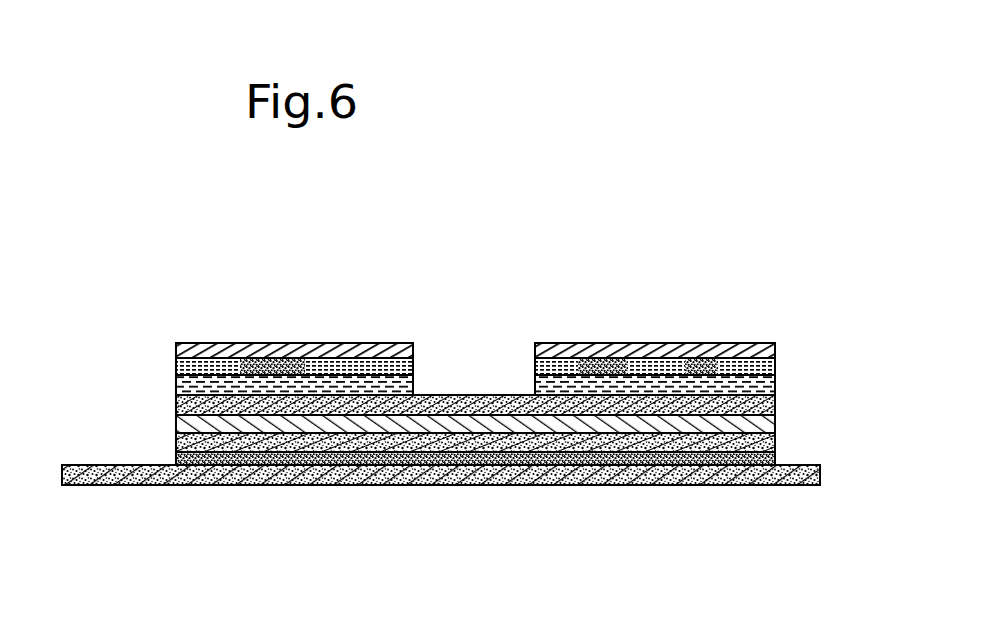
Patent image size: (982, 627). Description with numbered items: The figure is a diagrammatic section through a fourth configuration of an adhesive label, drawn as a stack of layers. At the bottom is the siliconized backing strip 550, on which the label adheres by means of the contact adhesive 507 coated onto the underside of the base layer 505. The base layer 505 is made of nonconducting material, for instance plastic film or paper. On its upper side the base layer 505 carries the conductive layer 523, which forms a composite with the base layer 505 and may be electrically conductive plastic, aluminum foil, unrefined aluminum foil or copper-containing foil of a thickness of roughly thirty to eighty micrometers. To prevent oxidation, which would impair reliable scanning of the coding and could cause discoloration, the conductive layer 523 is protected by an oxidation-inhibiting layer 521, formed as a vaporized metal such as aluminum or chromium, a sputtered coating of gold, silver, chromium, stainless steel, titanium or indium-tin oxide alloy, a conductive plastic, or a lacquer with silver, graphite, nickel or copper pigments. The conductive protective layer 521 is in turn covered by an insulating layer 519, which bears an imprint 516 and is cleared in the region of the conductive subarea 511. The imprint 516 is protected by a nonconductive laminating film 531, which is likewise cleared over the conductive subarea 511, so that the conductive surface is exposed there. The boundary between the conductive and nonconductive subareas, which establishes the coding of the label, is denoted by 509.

The base layer 505 is at (176, 443).
The contact adhesive 507 is at (775, 458).
The boundary separating conductive and nonconductive subareas 509 is at (417, 362).
The conductive subarea 511 is at (475, 394).
The imprint 516 is at (176, 369).
The insulating layer 519 is at (775, 382).
The oxidation-inhibiting layer 521 is at (176, 406).
The conductive layer 523 is at (775, 418).
The nonconductive laminating film 531 is at (720, 343).
The siliconized backing strip 550 is at (713, 485).